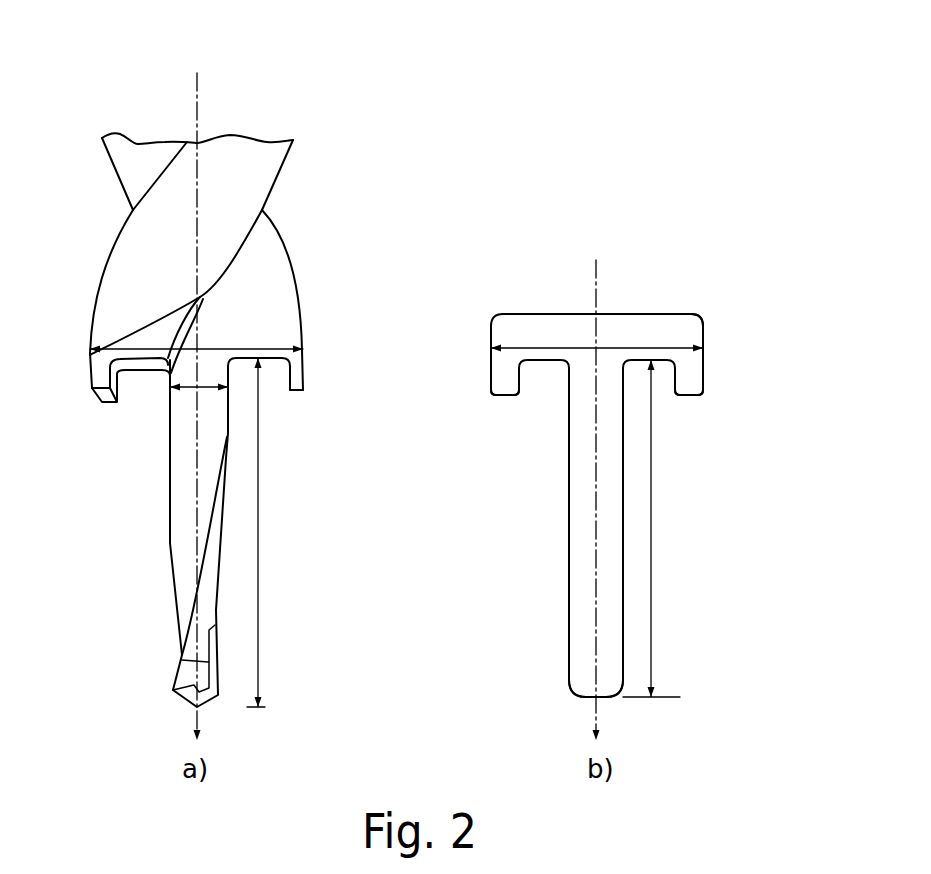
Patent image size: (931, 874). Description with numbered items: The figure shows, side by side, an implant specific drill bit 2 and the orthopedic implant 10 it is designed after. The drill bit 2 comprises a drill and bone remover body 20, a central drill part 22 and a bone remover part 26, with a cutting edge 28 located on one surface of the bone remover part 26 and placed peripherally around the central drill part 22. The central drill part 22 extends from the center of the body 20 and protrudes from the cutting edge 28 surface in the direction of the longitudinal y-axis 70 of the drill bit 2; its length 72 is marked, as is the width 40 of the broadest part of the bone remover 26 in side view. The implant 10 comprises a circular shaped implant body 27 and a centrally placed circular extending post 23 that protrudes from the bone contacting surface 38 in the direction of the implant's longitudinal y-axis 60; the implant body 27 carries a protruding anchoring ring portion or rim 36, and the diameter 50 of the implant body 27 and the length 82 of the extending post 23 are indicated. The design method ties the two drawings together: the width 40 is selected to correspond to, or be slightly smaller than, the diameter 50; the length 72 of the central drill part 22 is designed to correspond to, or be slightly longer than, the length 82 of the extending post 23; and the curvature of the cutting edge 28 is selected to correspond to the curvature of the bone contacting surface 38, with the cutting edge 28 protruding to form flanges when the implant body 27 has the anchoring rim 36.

The implant specific drill bit 2 is at (324, 141).
The drill and bone remover body 20 is at (304, 172).
The central drill part 22 is at (187, 515).
The bone remover part 26 is at (263, 277).
The cutting edge 28 is at (304, 375).
The width of the broadest part of the bone remover 40 is at (253, 348).
The longitudinal y-axis of the implant specific drill bit 70 is at (197, 82).
The length of the central drill part 72 is at (258, 587).
The orthopedic implant 10 is at (706, 297).
The extending post 23 is at (587, 547).
The implant body 27 is at (683, 336).
The protruding anchoring ring portion 36 is at (683, 384).
The bone contacting surface 38 is at (542, 362).
The diameter of the implant body 50 is at (605, 348).
The longitudinal y-axis of the implant 60 is at (597, 260).
The length of the extending post 82 is at (651, 628).